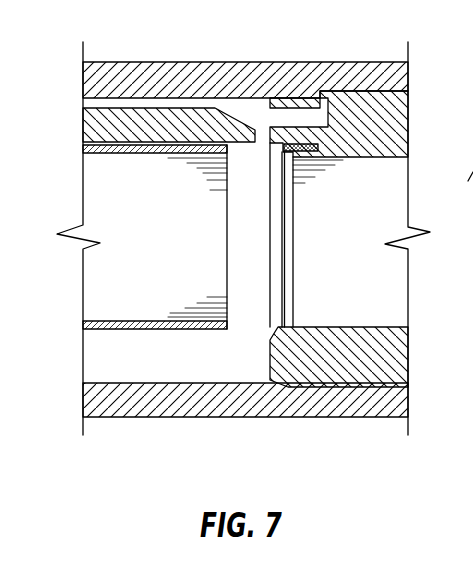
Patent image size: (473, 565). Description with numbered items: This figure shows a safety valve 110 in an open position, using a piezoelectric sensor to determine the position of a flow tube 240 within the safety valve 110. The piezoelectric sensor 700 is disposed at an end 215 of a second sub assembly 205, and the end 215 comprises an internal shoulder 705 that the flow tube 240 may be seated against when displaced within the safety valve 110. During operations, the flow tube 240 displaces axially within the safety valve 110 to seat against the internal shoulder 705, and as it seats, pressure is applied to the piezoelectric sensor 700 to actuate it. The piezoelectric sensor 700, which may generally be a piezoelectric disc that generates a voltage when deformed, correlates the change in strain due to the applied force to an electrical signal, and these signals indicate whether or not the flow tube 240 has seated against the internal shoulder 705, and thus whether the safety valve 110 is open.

The safety valve 110 is at (352, 443).
The second sub assembly 205 is at (418, 115).
The end 215 is at (402, 92).
The flow tube 240 is at (97, 188).
The piezoelectric sensor 700 is at (302, 140).
The internal shoulder 705 is at (272, 137).